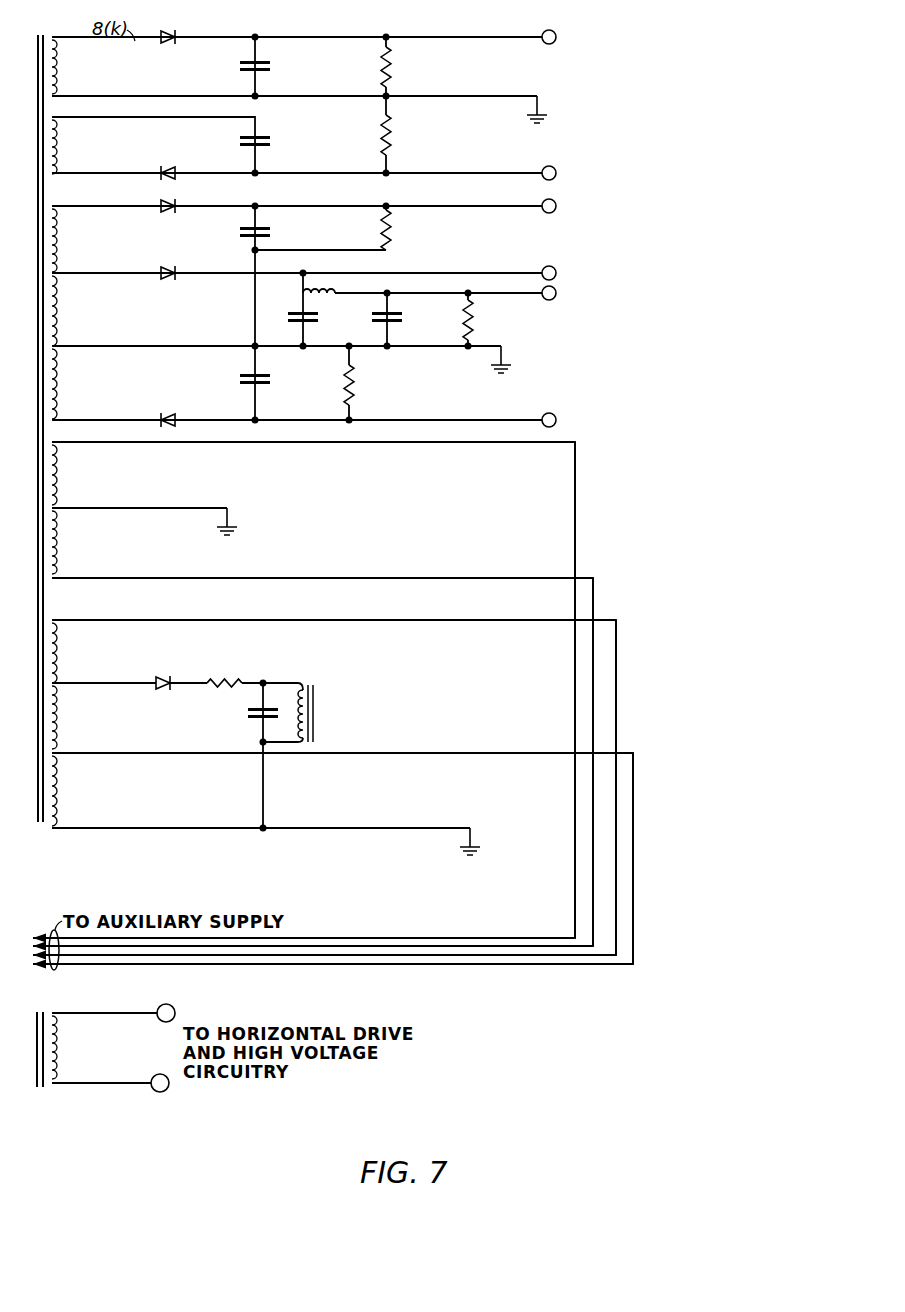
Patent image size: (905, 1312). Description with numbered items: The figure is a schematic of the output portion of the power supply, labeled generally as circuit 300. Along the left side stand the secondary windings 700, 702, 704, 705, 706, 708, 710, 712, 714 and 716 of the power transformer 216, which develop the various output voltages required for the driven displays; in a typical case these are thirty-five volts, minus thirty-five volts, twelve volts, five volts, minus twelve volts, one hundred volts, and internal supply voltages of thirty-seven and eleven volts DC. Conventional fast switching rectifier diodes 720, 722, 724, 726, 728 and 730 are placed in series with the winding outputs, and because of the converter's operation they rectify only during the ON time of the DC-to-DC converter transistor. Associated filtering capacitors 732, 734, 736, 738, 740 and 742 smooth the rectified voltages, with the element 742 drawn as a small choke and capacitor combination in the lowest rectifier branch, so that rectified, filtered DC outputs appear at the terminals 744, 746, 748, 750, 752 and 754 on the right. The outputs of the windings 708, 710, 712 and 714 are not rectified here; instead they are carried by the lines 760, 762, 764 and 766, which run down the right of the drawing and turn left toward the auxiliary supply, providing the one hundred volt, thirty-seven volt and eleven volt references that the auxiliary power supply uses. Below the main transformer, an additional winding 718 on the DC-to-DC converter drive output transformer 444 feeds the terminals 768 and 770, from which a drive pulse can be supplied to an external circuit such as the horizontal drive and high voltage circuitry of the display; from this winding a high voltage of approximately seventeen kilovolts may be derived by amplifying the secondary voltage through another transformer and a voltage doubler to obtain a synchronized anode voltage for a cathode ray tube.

The power transformer 216 is at (38, 826).
The power supply circuit 300 is at (496, 1034).
The DC-to-DC converter drive output transformer 444 is at (38, 1010).
The winding 700 is at (63, 64).
The winding 702 is at (63, 147).
The winding 704 is at (63, 243).
The winding 705 is at (63, 322).
The winding 706 is at (63, 395).
The winding 708 is at (63, 482).
The winding 710 is at (63, 555).
The winding 712 is at (63, 668).
The winding 714 is at (63, 728).
The winding 716 is at (63, 795).
The additional winding 718 is at (63, 1045).
The fast switching rectifier diode 720 is at (160, 41).
The fast switching rectifier diode 722 is at (168, 167).
The fast switching rectifier diode 724 is at (168, 214).
The fast switching rectifier diode 726 is at (167, 282).
The fast switching rectifier diode 728 is at (168, 410).
The fast switching rectifier diode 730 is at (169, 678).
The filtering capacitor 732 is at (273, 65).
The filtering capacitor 734 is at (273, 140).
The filtering capacitor 736 is at (273, 232).
The filtering capacitor 738 is at (378, 320).
The filtering capacitor 740 is at (273, 378).
The filtering capacitor 742 is at (286, 698).
The output terminal 744 is at (556, 35).
The output terminal 746 is at (556, 171).
The output terminal 748 is at (556, 204).
The output terminal 750 is at (556, 271).
The output terminal 752 is at (556, 293).
The output terminal 754 is at (556, 418).
The line 760 is at (577, 492).
The line 762 is at (590, 583).
The line 764 is at (618, 632).
The line 766 is at (635, 757).
The terminal 768 is at (171, 1005).
The terminal 770 is at (158, 1092).